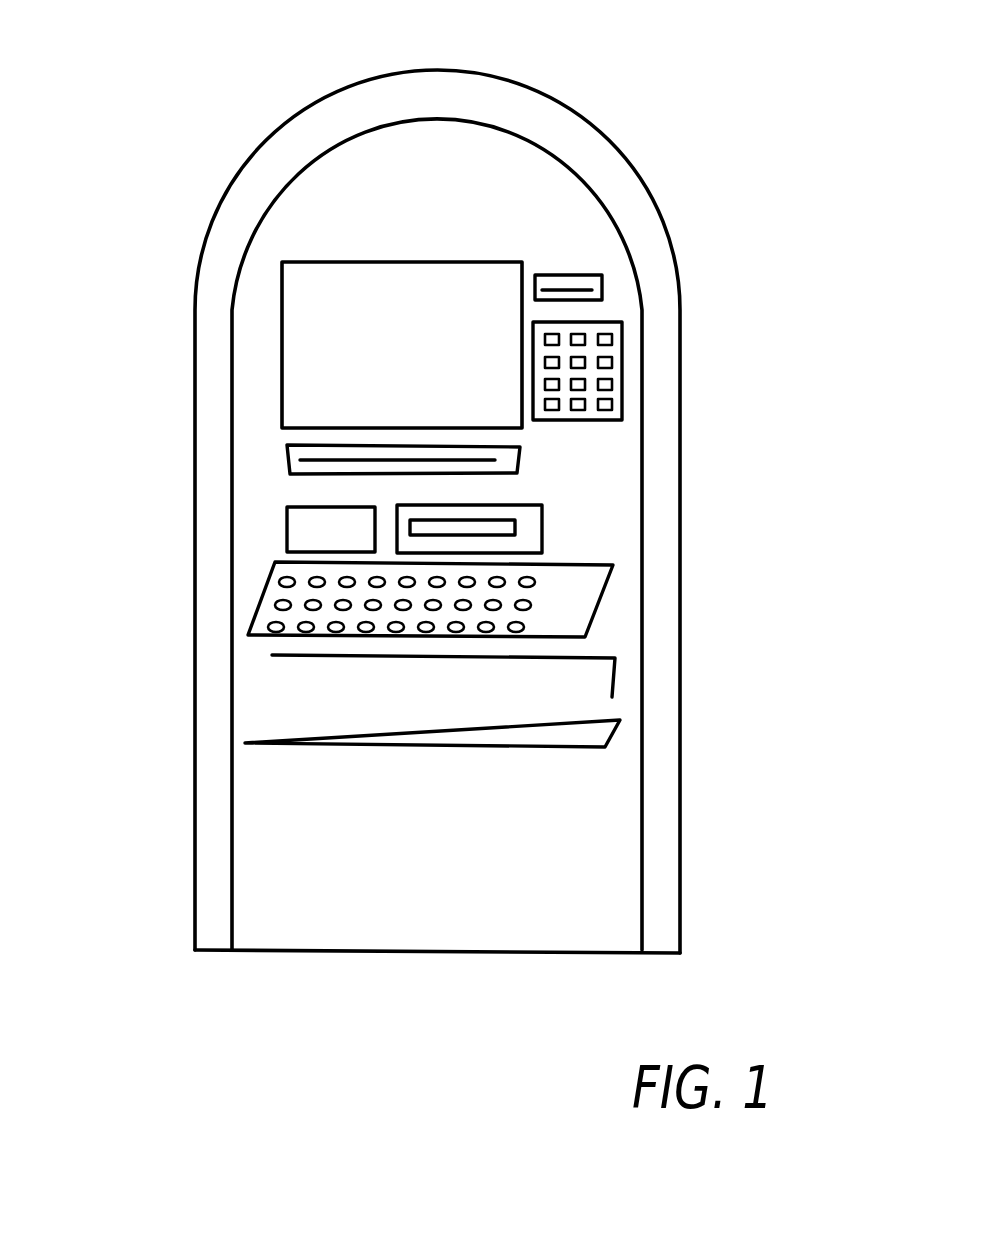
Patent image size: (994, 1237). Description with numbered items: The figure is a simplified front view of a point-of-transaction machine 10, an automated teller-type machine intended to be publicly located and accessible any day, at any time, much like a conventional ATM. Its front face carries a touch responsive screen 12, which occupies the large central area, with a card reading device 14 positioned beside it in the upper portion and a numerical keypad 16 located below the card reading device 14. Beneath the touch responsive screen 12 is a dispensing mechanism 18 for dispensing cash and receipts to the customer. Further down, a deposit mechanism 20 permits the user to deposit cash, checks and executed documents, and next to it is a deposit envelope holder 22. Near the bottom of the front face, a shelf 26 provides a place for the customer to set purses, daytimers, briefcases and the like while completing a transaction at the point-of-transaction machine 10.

The point-of-transaction machine 10 is at (214, 132).
The touch responsive screen 12 is at (297, 365).
The card reading device 14 is at (603, 287).
The numerical keypad 16 is at (617, 365).
The dispensing mechanism 18 is at (515, 462).
The deposit mechanism 20 is at (357, 530).
The deposit envelope holder 22 is at (530, 540).
The shelf 26 is at (585, 710).